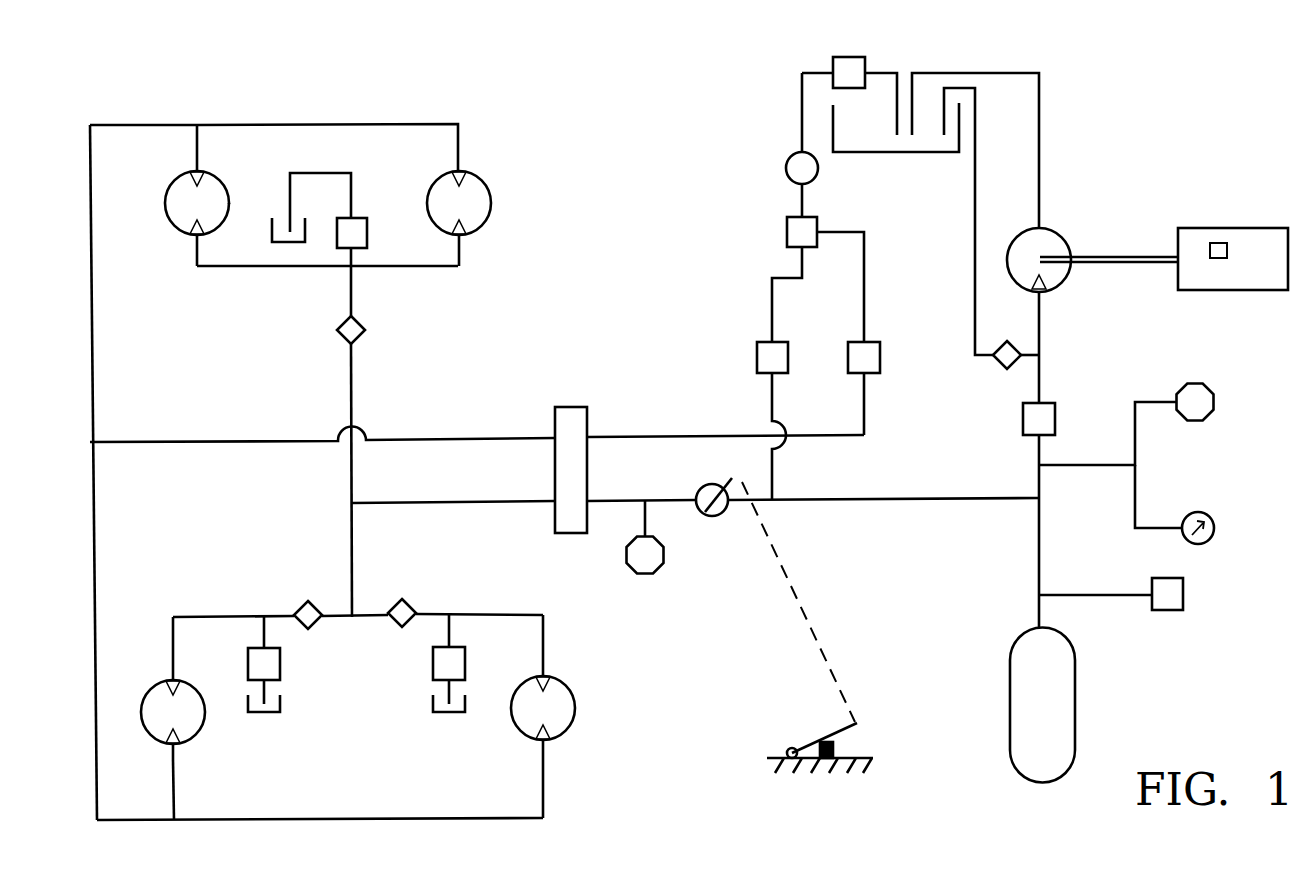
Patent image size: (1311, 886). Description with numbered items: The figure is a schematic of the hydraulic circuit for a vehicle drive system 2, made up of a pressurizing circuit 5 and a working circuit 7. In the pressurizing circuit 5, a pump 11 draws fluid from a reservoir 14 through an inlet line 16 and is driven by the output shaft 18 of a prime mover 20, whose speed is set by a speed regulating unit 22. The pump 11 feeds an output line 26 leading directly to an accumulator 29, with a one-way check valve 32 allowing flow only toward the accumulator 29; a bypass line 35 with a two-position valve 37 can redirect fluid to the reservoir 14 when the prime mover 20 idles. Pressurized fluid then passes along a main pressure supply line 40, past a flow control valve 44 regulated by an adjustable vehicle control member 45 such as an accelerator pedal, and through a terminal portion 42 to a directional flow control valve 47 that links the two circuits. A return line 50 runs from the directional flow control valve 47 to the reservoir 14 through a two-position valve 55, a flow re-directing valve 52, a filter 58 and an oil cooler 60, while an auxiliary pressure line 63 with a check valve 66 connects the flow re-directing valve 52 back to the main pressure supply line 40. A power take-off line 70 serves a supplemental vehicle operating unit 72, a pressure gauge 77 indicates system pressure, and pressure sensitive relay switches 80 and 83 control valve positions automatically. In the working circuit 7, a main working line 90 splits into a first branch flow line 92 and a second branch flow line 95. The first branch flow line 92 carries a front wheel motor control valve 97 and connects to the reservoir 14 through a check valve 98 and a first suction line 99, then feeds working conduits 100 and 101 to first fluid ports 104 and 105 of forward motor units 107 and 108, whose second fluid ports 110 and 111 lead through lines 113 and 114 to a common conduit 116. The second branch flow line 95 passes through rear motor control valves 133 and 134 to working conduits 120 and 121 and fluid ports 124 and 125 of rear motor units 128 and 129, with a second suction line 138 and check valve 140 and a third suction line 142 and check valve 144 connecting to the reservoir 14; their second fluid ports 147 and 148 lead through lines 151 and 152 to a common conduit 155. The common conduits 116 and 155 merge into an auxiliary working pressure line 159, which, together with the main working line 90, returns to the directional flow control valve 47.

The drive system 2 is at (1135, 108).
The pressurizing circuit 5 is at (762, 223).
The working circuit 7 is at (410, 118).
The pump 11 is at (1052, 240).
The reservoir 14 is at (289, 240).
The inlet line 16 is at (1041, 121).
The output shaft 18 is at (1113, 263).
The prime mover 20 is at (1248, 242).
The speed regulating unit 22 is at (1227, 255).
The output line 26 is at (1042, 372).
The accumulator 29 is at (1045, 707).
The one-way check valve 32 is at (1046, 418).
The bypass line 35 is at (972, 288).
The two-position valve 37 is at (998, 365).
The main pressure supply line 40 is at (806, 503).
The terminal portion 42 is at (607, 499).
The flow control valve 44 is at (698, 516).
The adjustable vehicle control member 45 is at (868, 723).
The directional flow control valve 47 is at (586, 407).
The return line 50 is at (742, 432).
The flow re-directing valve 52 is at (813, 222).
The two-position valve 55 is at (880, 358).
The filter 58 is at (796, 171).
The oil cooler 60 is at (848, 57).
The auxiliary pressure line 63 is at (770, 290).
The check valve 66 is at (757, 352).
The power take-off line 70 is at (1083, 596).
The supplemental vehicle operating unit 72 is at (1162, 608).
The pressure gauge 77 is at (1214, 532).
The first pressure sensitive relay switch 80 is at (1205, 402).
The second pressure sensitive relay switch 83 is at (648, 565).
The main working line 90 is at (452, 504).
The first branch flow line 92 is at (356, 289).
The second branch flow line 95 is at (362, 572).
The front wheel motor control valve 97 is at (362, 335).
The check valve 98 is at (367, 238).
The first suction line 99 is at (353, 188).
The working conduit 100 is at (225, 268).
The working conduit 101 is at (433, 268).
The first fluid port 104 is at (193, 234).
The first fluid port 105 is at (463, 230).
The forward motor unit 107 is at (229, 204).
The forward motor unit 108 is at (491, 205).
The second fluid port 110 is at (189, 181).
The second fluid port 111 is at (461, 168).
The line 113 is at (199, 146).
The line 114 is at (462, 138).
The common conduit 116 is at (312, 124).
The working conduit 120 is at (329, 620).
The working conduit 121 is at (440, 615).
The first fluid port 124 is at (172, 680).
The second fluid port 125 is at (549, 677).
The rear motor unit 128 is at (200, 727).
The rear motor unit 129 is at (576, 705).
The rear motor control valve 133 is at (300, 601).
The second rear motor control valve 134 is at (408, 600).
The second suction line 138 is at (267, 683).
The check valve 140 is at (247, 665).
The third suction line 142 is at (452, 620).
The check valve 144 is at (432, 660).
The second fluid port 147 is at (177, 745).
The second fluid port 148 is at (549, 740).
The line 151 is at (178, 780).
The line 152 is at (546, 790).
The common conduit 155 is at (271, 821).
The auxiliary working pressure line 159 is at (185, 445).